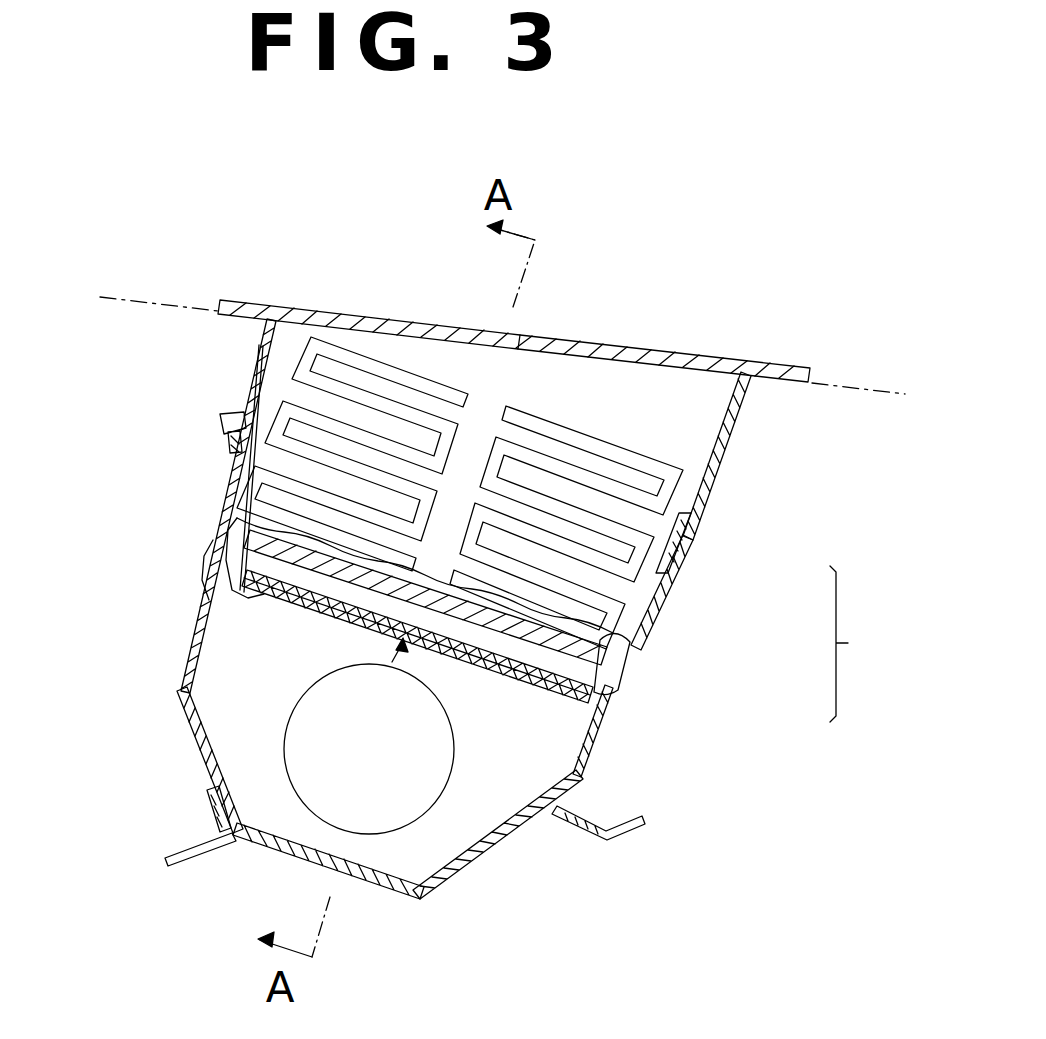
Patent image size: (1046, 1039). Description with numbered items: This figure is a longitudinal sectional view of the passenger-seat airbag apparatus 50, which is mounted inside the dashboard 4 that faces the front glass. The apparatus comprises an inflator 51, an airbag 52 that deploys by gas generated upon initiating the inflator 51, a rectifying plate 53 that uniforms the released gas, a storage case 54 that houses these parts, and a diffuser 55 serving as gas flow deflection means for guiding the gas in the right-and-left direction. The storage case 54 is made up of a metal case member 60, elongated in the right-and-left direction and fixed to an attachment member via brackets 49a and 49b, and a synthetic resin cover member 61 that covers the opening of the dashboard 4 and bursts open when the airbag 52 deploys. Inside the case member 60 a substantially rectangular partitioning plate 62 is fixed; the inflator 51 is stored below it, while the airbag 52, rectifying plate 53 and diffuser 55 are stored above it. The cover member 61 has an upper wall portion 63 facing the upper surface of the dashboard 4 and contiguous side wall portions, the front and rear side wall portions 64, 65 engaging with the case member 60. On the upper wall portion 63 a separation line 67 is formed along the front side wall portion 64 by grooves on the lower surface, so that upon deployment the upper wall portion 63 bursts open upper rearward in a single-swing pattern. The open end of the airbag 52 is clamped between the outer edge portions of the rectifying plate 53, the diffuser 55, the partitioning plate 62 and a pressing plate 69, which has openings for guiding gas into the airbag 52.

The dashboard 4 is at (885, 390).
The bracket 49a is at (166, 862).
The bracket 49b is at (645, 824).
The passenger-seat airbag apparatus 50 is at (205, 247).
The inflator 51 is at (400, 834).
The airbag 52 is at (583, 427).
The rectifying plate 53 is at (224, 522).
The storage case 54 is at (869, 644).
The diffuser 55 is at (650, 640).
The case member 60 is at (656, 627).
The cover member 61 is at (705, 538).
The partitioning plate 62 is at (537, 677).
The upper wall portion 63 is at (380, 318).
The front side wall portion 64 is at (742, 412).
The rear side wall portion 65 is at (255, 342).
The separation line 67 is at (727, 360).
The pressing plate 69 is at (273, 590).